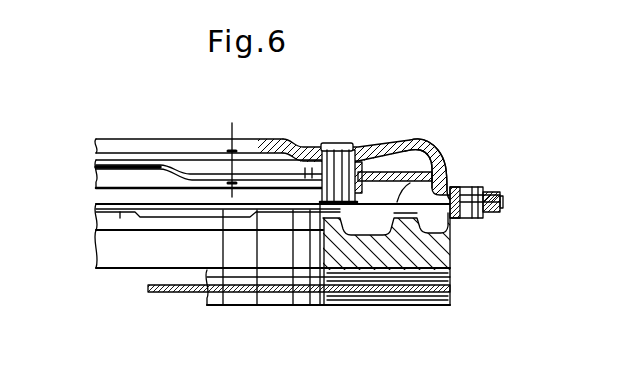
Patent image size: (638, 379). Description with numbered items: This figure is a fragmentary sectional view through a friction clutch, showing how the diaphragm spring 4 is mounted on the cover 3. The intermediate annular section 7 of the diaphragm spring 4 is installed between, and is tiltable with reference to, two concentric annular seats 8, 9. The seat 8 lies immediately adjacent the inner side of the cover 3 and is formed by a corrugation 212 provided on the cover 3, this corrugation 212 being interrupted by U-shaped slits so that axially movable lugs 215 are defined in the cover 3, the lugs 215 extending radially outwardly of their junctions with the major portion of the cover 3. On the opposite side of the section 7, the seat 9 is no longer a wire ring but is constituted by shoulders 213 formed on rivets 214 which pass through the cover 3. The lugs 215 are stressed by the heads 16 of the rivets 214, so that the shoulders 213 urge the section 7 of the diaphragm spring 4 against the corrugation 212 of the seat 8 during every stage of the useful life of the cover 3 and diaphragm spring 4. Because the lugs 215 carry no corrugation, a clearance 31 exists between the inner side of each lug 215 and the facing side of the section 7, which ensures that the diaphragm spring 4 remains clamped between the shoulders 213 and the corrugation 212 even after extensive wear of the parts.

The cover 3 is at (443, 188).
The diaphragm spring 4 is at (206, 170).
The intermediate annular section 7 is at (423, 151).
The seat 8 is at (299, 150).
The corrugation 212 is at (410, 139).
The seat 9 is at (435, 210).
The shoulders 213 is at (362, 182).
The heads 16 is at (332, 141).
The clearance 31 is at (237, 166).
The rivets 214 is at (334, 172).
The lugs 215 is at (359, 160).